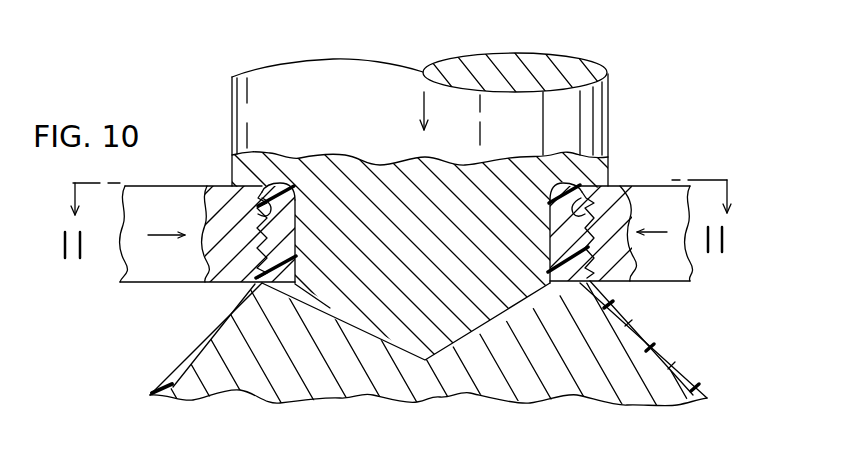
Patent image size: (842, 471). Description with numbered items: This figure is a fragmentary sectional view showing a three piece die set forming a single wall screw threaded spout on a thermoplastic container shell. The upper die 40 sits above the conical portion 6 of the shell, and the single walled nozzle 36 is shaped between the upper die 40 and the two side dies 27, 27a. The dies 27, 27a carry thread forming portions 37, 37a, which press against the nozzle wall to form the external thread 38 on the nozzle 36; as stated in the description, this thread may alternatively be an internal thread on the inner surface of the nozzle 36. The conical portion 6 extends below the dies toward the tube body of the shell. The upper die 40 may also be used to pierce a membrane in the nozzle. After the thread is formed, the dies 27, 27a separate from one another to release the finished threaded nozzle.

The upper die 40 is at (314, 80).
The thread forming portion 37 is at (275, 183).
The single walled nozzle 36 is at (545, 180).
The external thread 38 is at (609, 187).
The die 27 is at (159, 268).
The die 27a is at (680, 272).
The thread forming portion 37a is at (604, 274).
The conical portion 6 is at (667, 362).